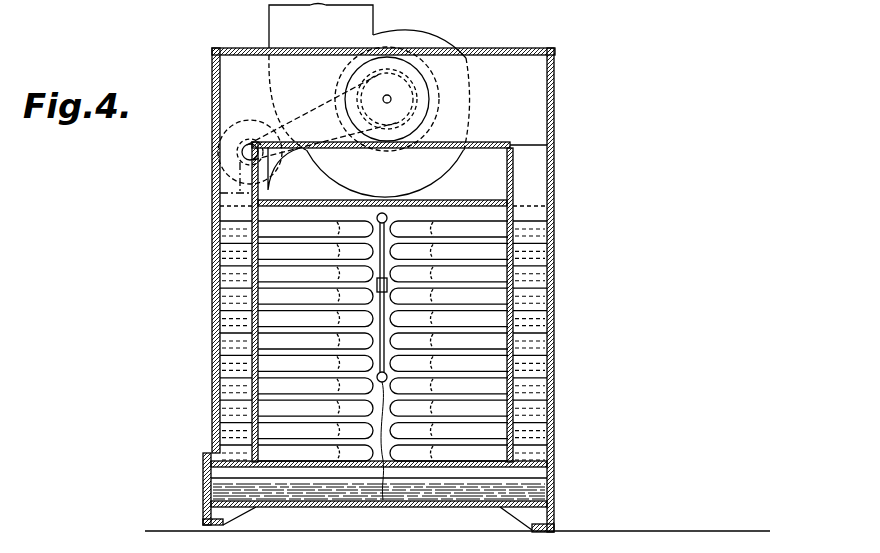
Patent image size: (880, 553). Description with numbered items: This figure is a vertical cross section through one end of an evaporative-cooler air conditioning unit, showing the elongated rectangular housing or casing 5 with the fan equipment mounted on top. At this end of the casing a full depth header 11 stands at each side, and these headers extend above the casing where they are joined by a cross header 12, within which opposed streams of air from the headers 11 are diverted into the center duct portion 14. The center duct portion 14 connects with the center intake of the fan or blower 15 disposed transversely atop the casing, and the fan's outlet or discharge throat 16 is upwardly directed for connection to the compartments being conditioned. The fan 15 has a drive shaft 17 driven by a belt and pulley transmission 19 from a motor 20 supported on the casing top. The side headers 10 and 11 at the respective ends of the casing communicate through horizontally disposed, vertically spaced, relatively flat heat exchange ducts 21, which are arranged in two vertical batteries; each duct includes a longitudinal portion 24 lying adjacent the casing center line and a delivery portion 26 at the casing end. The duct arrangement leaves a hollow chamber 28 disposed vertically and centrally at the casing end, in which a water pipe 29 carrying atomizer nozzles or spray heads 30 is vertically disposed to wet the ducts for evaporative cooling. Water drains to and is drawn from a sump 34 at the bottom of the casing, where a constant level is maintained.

The housing or casing 5 is at (197, 322).
The side header 10 is at (457, 542).
The full depth header 11 is at (227, 342).
The cross header 12 is at (374, 98).
The center duct portion 14 is at (413, 70).
The fan or blower 15 is at (433, 163).
The outlet or discharge throat 16 is at (360, 18).
The drive shaft 17 is at (389, 102).
The belt and pulley transmission 19 is at (315, 104).
The motor 20 is at (238, 178).
The heat exchange ducts 21 is at (270, 273).
The longitudinal portion 24 is at (382, 213).
The delivery portion 26 is at (228, 228).
The hollow chamber 28 is at (490, 347).
The water pipe 29 is at (370, 353).
The atomizer nozzles or spray heads 30 is at (383, 500).
The sump 34 is at (460, 490).